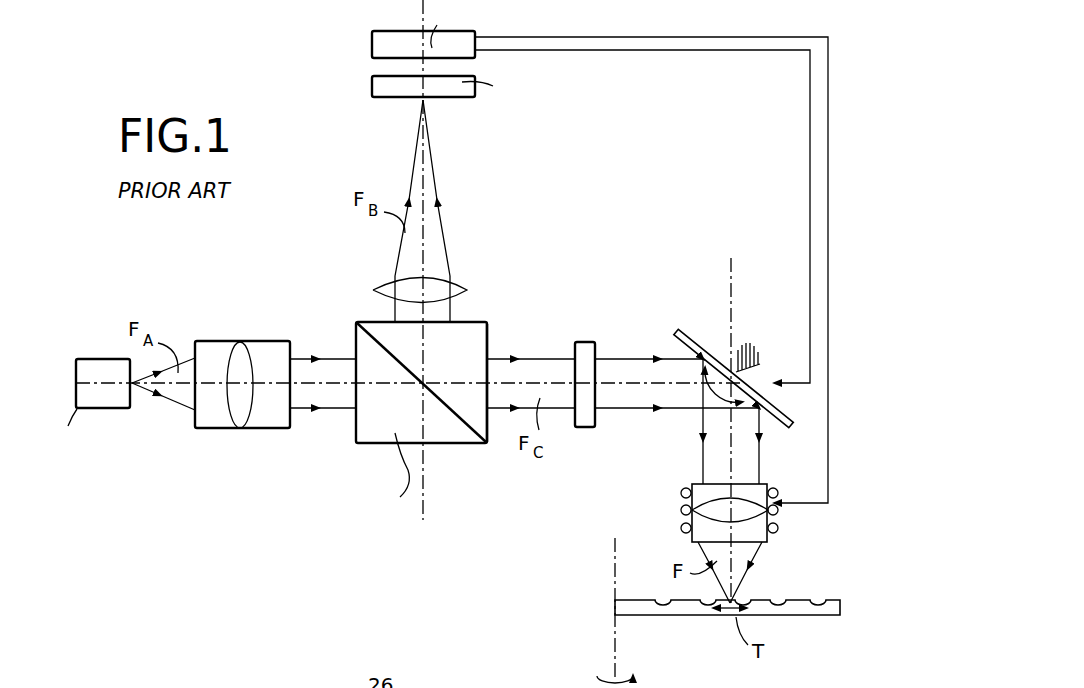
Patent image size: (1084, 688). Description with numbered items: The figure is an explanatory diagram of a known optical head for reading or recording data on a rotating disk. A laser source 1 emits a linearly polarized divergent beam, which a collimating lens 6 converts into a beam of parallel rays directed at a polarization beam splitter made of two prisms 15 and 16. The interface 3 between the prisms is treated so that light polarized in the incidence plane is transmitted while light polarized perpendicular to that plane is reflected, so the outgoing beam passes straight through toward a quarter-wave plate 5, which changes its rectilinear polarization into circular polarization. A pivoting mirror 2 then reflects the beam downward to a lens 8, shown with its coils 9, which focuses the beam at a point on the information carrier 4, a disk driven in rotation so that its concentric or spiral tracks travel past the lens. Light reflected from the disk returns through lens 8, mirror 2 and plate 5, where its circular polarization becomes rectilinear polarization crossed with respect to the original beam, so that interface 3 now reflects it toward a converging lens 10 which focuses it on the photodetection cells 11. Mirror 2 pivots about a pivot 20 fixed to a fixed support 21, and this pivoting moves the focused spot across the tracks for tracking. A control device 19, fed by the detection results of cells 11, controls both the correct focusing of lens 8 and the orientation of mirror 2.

The laser source 1 is at (88, 372).
The pivoting mirror 2 is at (672, 333).
The interface 3 is at (455, 434).
The information carrier 4 is at (706, 612).
The quarter-wave plate 5 is at (586, 346).
The collimating lens 6 is at (226, 345).
The lens 8 is at (758, 534).
The focusing coil 9 is at (681, 493).
The converging lens 10 is at (458, 282).
The photodetection cells 11 is at (372, 88).
The prism 15 is at (472, 342).
The prism 16 is at (383, 422).
The control device 19 is at (372, 42).
The pivot 20 is at (732, 368).
The fixed support 21 is at (752, 348).